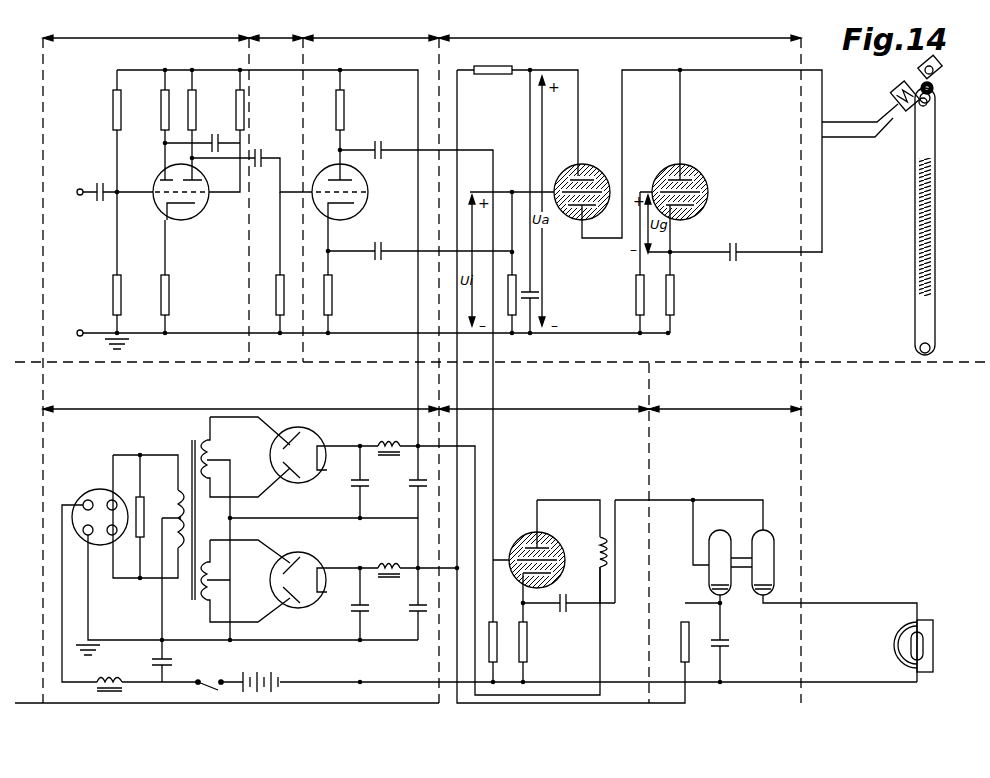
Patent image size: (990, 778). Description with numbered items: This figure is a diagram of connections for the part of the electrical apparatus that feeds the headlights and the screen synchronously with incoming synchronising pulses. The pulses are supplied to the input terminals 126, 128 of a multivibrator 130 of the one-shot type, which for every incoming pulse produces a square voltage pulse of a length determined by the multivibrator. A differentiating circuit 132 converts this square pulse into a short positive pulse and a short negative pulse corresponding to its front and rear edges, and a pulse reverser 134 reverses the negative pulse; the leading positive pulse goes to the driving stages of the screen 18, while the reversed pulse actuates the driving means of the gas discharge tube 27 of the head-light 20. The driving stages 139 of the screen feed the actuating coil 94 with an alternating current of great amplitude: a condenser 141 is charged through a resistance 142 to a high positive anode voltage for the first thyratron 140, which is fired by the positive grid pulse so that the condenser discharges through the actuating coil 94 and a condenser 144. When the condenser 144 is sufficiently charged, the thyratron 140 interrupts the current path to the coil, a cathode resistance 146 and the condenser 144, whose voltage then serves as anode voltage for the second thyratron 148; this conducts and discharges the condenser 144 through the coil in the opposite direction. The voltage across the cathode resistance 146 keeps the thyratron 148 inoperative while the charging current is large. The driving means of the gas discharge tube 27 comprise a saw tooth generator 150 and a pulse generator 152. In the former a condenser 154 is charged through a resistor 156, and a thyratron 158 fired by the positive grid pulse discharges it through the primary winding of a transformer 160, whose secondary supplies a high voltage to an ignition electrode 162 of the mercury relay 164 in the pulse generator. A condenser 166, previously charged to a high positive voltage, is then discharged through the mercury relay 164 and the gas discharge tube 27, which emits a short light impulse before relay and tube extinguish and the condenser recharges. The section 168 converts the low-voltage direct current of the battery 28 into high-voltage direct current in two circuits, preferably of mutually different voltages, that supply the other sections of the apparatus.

The input terminal 126 is at (80, 190).
The input terminal 128 is at (80, 331).
The multivibrator 130 is at (137, 38).
The differentiating circuit 132 is at (266, 38).
The pulse reverser 134 is at (355, 38).
The driving stages 139 is at (600, 38).
The resistance 142 is at (494, 76).
The thyratron 140 is at (616, 145).
The thyratron 148 is at (697, 168).
The condenser 144 is at (735, 243).
The condenser 141 is at (542, 297).
The cathode resistance 146 is at (677, 300).
The section 168 is at (225, 409).
The saw tooth generator 150 is at (531, 394).
The pulse generator 152 is at (711, 394).
The thyratron 158 is at (526, 503).
The transformer 160 is at (607, 533).
The ignition electrode 162 is at (765, 546).
The mercury relay 164 is at (766, 568).
The condenser 166 is at (728, 645).
The condenser 154 is at (564, 612).
The resistor 156 is at (528, 648).
The battery 28 is at (273, 680).
The head-light 20 is at (931, 618).
The gas discharge tube 27 is at (925, 650).
The actuating coil 94 is at (899, 91).
The screen 18 is at (937, 198).